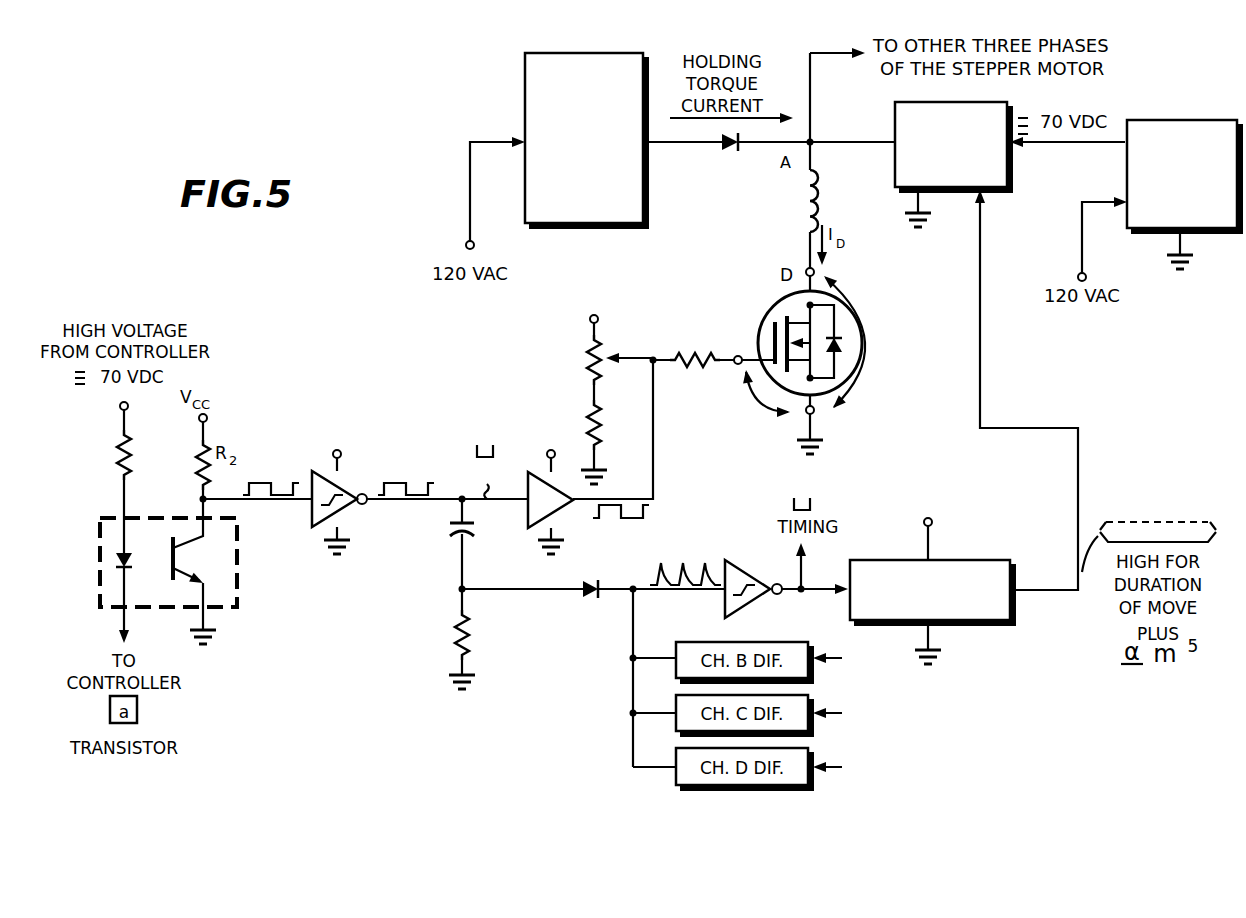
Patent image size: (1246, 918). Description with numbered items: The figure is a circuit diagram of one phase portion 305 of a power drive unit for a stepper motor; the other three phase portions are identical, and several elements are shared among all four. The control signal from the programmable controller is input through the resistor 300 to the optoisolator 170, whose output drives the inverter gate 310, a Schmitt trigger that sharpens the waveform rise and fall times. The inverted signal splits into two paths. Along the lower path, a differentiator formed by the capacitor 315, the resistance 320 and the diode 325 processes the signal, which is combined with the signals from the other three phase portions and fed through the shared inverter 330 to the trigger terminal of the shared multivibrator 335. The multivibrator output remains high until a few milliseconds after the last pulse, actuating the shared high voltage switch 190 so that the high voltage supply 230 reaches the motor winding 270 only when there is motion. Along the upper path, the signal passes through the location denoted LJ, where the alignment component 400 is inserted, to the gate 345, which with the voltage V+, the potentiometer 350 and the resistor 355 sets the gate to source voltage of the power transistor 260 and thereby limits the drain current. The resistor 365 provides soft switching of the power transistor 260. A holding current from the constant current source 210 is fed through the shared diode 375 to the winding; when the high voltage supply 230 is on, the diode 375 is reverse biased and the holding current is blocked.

The constant current source 210 is at (578, 54).
The shared diode 375 is at (720, 146).
The shared high voltage switch 190 is at (895, 102).
The shared high voltage supply 230 is at (1183, 120).
The motor winding 270 is at (822, 201).
The power transistor 260 is at (765, 312).
The resistor 365 is at (696, 352).
The potentiometer 350 is at (582, 351).
The resistor 355 is at (582, 416).
The gate 345 is at (565, 517).
The phase portion 305 is at (382, 396).
The alignment component 400 is at (478, 425).
The inverter gate 310 is at (312, 520).
The capacitor 315 is at (448, 533).
The resistance 320 is at (460, 638).
The diode 325 is at (590, 598).
The shared inverter 330 is at (735, 560).
The shared multivibrator 335 is at (1010, 562).
The resistor 300 is at (114, 458).
The optoisolator 170 is at (100, 561).